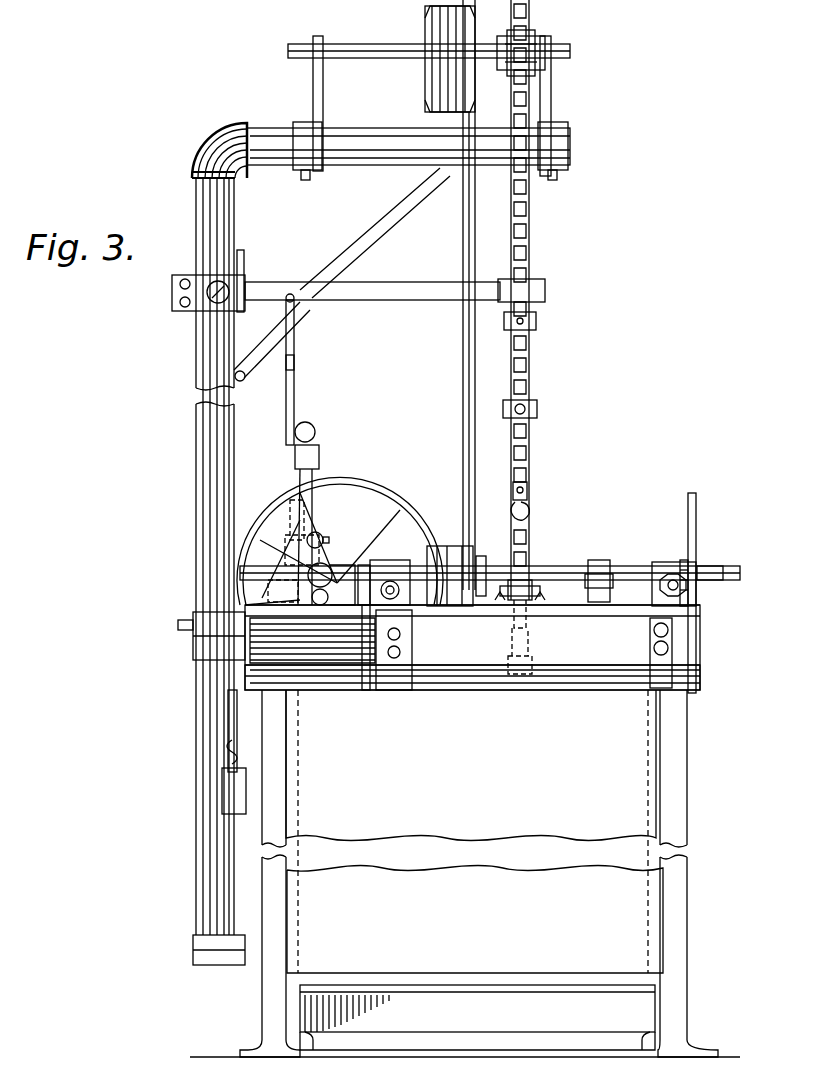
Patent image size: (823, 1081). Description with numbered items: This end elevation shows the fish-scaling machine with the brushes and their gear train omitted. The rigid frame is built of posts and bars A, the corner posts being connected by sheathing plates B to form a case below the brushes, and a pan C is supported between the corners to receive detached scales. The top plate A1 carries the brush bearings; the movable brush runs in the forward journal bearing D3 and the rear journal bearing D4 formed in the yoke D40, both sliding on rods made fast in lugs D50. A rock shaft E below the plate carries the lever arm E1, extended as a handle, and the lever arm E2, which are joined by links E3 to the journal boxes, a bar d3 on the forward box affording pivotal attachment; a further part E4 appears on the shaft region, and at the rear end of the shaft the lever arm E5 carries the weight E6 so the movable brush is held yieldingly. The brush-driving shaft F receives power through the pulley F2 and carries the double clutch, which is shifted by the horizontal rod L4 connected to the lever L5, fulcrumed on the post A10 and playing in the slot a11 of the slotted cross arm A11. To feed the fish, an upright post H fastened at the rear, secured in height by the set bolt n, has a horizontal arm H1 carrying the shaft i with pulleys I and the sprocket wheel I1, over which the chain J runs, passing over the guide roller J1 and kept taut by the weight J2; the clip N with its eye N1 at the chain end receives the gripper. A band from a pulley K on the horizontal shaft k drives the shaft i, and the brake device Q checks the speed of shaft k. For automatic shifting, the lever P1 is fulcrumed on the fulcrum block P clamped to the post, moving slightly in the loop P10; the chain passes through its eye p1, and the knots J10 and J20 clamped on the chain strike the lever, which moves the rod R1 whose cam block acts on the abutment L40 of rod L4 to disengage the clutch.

The shaft i is at (363, 50).
The pulley I is at (426, 20).
The sprocket wheel I1 is at (530, 34).
The horizontal arm H1 is at (355, 142).
The upright post H is at (212, 452).
The chain J is at (531, 222).
The knot J20 is at (537, 322).
The knot J10 is at (538, 410).
The guide roller J1 is at (530, 580).
The weight J2 is at (520, 664).
The clip N is at (528, 500).
The eye N1 is at (530, 512).
The fulcrum block P is at (200, 300).
The loop P10 is at (243, 258).
The lever P1 is at (392, 300).
The eye p1 is at (530, 290).
The rod R1 is at (295, 372).
The slot a11 is at (313, 426).
The slotted cross arm A11 is at (295, 458).
The pulley F2 is at (370, 510).
The lever L5 is at (314, 494).
The post A10 is at (306, 505).
The horizontal rod L4 is at (303, 538).
The abutment L40 is at (323, 538).
The shaft F is at (332, 575).
The journal bearing D4 is at (384, 572).
The pulley K is at (474, 565).
The horizontal shaft k is at (460, 556).
The brake device Q is at (600, 560).
The journal bearing D3 is at (660, 576).
The link E3 is at (684, 560).
The lever arm E1 is at (697, 522).
The bar d3 is at (700, 590).
The lug D50 is at (700, 606).
The top plate A1 is at (472, 647).
The rock shaft E is at (462, 690).
The yoke D40 is at (330, 610).
The bar E4 is at (352, 600).
The lever arm E2 is at (366, 628).
The set bolt n is at (178, 625).
The lever arm E5 is at (226, 720).
The weight E6 is at (226, 796).
The post A is at (275, 996).
The sheathing plate B is at (474, 831).
The pan C is at (477, 1017).